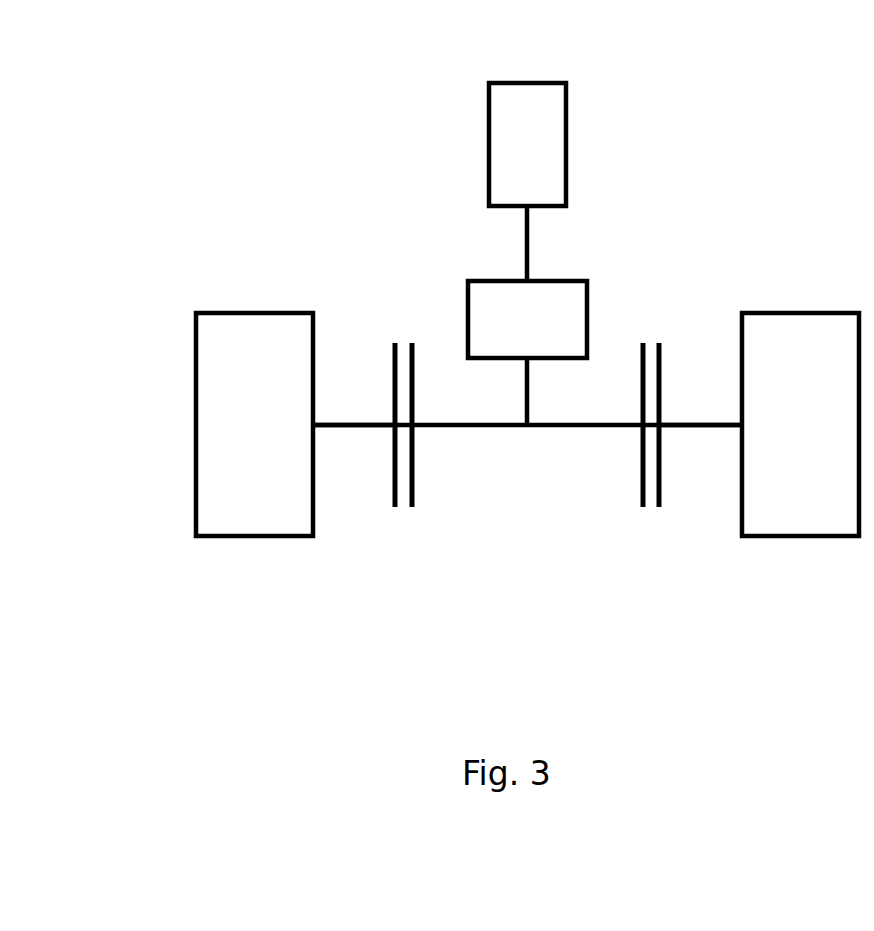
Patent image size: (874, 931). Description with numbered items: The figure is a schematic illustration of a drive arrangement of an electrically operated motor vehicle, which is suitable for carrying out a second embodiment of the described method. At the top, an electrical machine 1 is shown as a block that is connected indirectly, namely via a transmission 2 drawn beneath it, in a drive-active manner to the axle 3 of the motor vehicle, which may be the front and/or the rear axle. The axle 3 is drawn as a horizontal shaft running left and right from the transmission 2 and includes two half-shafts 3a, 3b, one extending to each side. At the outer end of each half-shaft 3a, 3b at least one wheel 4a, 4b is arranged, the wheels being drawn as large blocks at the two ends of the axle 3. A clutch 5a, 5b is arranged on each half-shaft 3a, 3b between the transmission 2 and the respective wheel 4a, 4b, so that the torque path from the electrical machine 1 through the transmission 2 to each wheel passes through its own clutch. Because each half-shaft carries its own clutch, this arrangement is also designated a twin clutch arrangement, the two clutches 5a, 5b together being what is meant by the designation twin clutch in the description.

The electrical machine 1 is at (514, 137).
The transmission 2 is at (539, 302).
The axle 3 is at (168, 421).
The half-shaft 3a is at (361, 422).
The half-shaft 3b is at (704, 425).
The wheel 4a is at (252, 504).
The wheel 4b is at (811, 488).
The clutch 5a is at (405, 490).
The clutch 5b is at (652, 492).